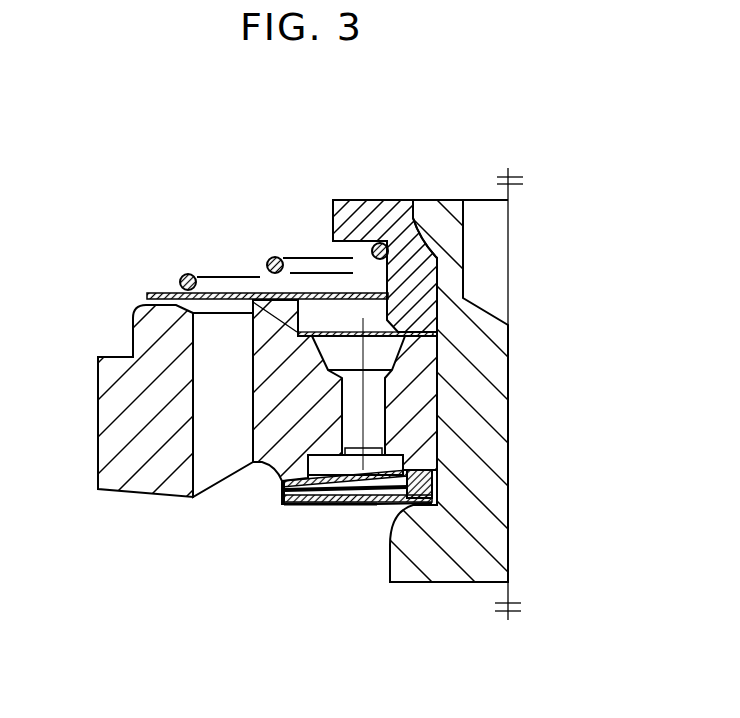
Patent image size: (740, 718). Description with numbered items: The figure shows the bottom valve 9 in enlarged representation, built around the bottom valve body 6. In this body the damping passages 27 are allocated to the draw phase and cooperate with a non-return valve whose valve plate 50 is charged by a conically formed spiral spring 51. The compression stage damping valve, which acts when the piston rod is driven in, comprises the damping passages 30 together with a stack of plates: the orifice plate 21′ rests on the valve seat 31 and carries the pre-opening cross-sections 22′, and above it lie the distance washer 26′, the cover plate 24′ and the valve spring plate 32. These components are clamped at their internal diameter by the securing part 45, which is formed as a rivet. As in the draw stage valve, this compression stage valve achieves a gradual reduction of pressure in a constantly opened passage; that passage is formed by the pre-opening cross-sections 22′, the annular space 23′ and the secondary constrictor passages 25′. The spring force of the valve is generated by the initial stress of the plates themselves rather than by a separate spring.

The pilot valve assembly 9 is at (245, 190).
The valve plate 50 is at (283, 273).
The conically formed spiral spring 51 is at (283, 260).
The damping passages 27 is at (218, 347).
The bottom valve body 6 is at (145, 373).
The securing part 45 is at (476, 345).
The damping passages 30 is at (352, 392).
The orifice plate 21′ is at (340, 473).
The pre-opening cross-sections 22′ is at (405, 470).
The distance washer 26′ is at (432, 484).
The cover plate 24′ is at (437, 482).
The valve seat 31 is at (283, 473).
The secondary constrictor passages 25′ is at (283, 497).
The valve spring plate 32 is at (288, 505).
The annular space 23′ is at (388, 510).